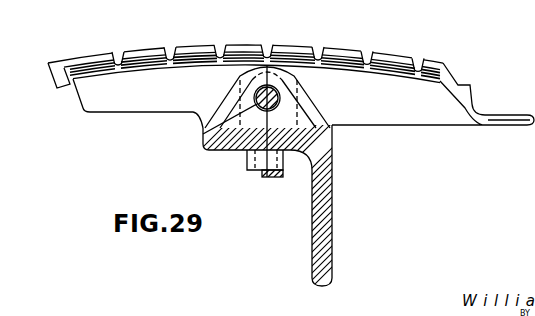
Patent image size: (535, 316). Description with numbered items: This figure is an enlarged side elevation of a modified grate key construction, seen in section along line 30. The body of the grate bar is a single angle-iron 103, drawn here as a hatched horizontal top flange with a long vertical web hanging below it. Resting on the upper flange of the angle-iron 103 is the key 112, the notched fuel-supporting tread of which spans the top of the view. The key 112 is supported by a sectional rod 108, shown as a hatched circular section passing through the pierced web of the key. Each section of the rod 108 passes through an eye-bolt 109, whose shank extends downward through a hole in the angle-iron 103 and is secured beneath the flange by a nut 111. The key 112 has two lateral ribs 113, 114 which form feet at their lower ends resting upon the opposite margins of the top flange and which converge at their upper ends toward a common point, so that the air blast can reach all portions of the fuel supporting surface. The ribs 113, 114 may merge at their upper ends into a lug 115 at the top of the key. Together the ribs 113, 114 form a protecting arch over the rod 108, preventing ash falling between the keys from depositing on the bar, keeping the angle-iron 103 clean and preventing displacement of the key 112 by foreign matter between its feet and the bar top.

The section line 30 is at (268, 66).
The angle-iron 103 is at (332, 193).
The sectional rod 108 is at (203, 128).
The eye-bolt 109 is at (276, 177).
The nut 111 is at (288, 173).
The key 112 is at (400, 48).
The lateral rib 113 is at (226, 96).
The lateral rib 114 is at (314, 103).
The lug 115 is at (272, 54).